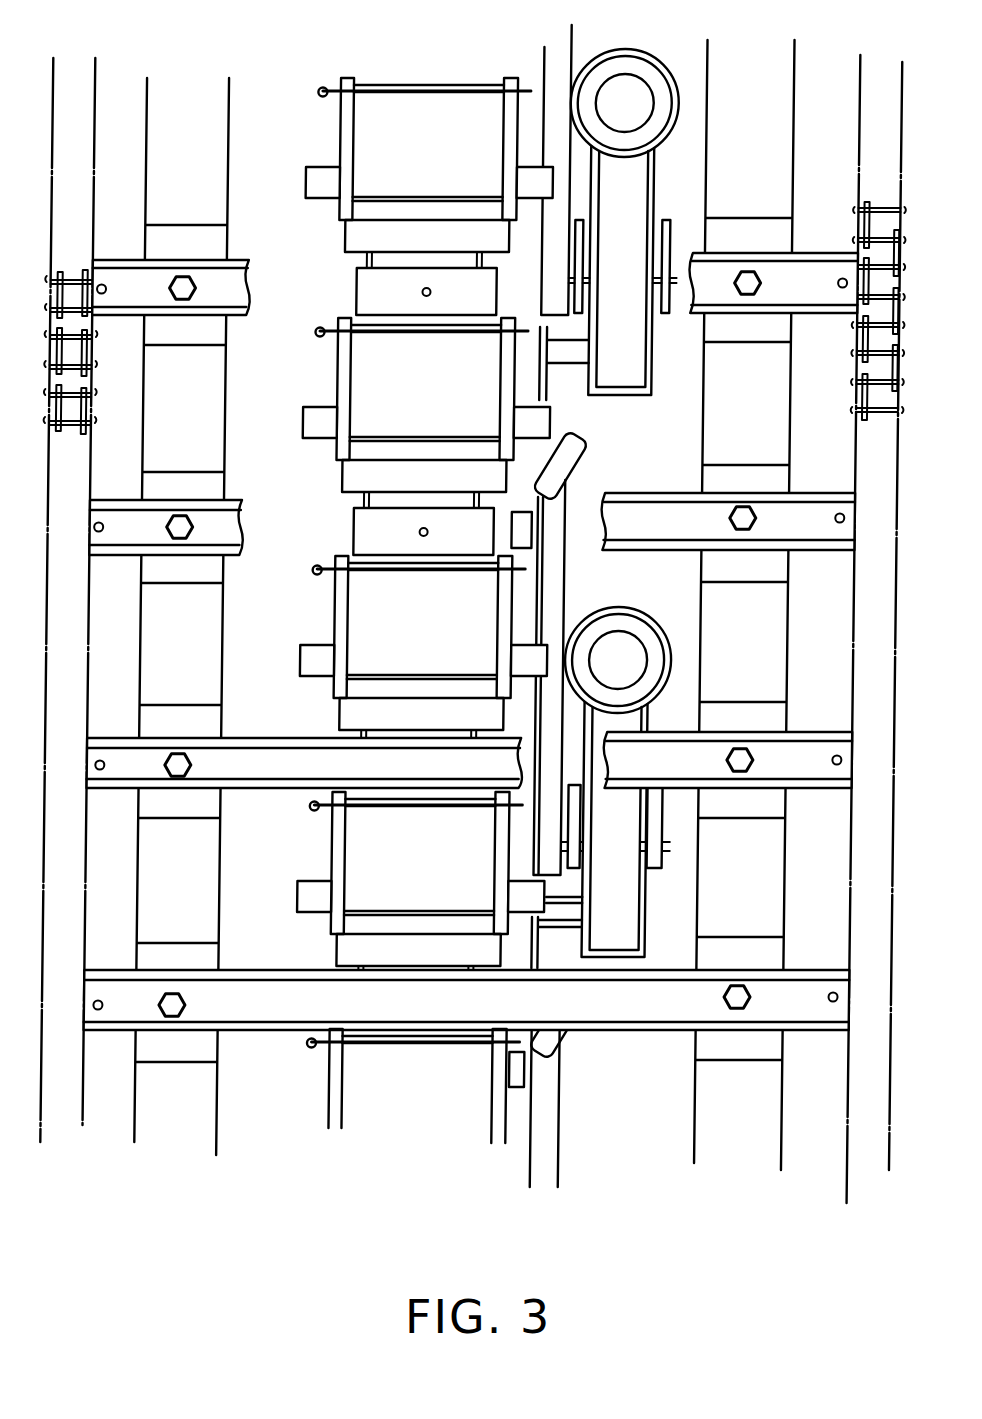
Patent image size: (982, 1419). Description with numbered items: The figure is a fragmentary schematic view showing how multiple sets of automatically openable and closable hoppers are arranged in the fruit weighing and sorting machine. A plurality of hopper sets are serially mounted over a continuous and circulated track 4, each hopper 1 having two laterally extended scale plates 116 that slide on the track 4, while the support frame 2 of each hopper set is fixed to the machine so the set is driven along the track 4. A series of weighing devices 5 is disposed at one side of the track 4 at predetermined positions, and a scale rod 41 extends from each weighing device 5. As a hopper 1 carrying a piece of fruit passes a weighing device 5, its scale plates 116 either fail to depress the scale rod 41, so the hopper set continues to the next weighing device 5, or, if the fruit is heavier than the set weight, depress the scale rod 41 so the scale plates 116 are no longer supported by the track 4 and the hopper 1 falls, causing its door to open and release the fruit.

The hopper 1 is at (398, 126).
The support frame 2 is at (373, 297).
The continuous and circulated track 4 is at (561, 1118).
The weighing device 5 is at (633, 98).
The scale rod 41 is at (555, 390).
The scale plate 116 is at (318, 185).